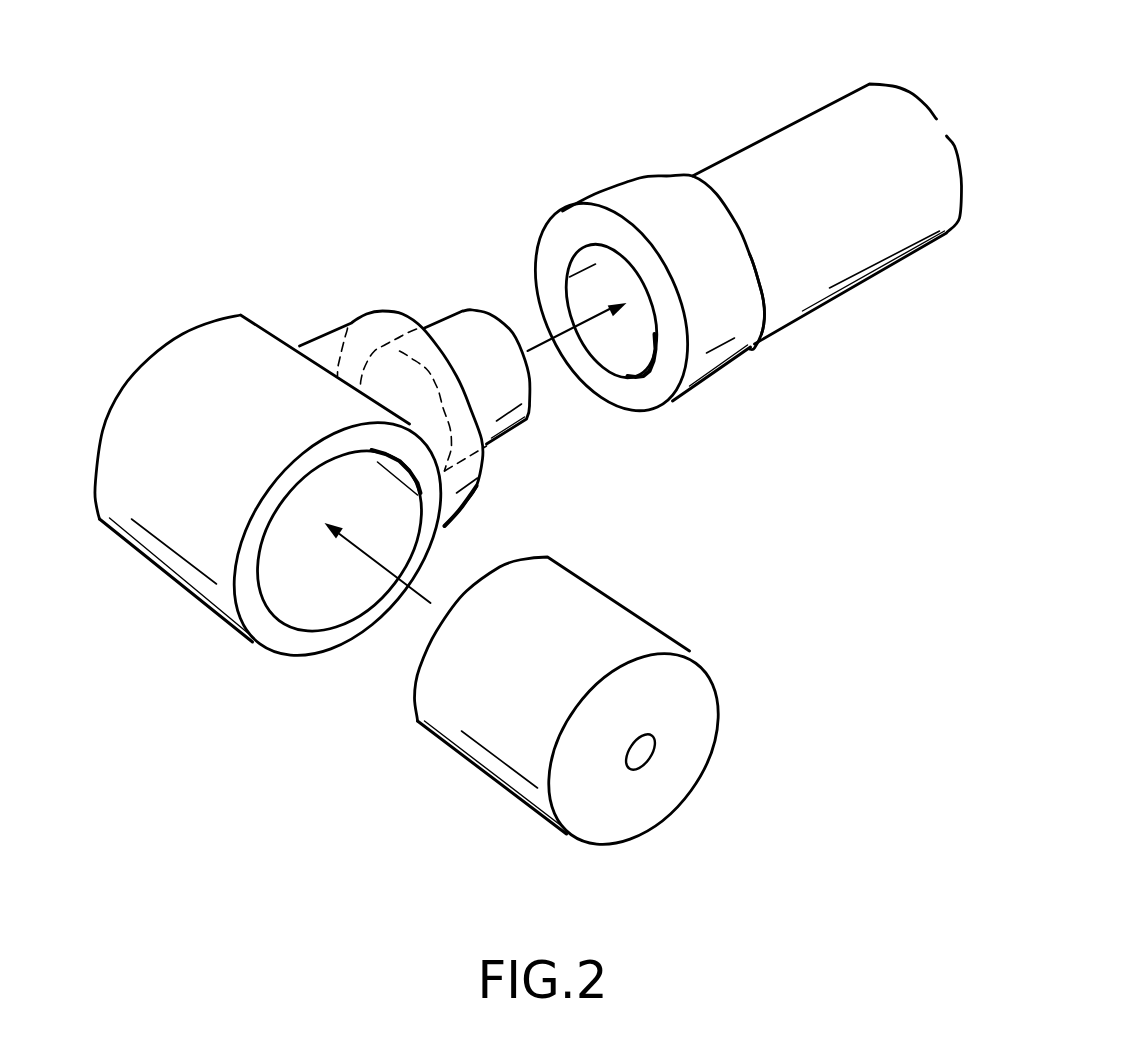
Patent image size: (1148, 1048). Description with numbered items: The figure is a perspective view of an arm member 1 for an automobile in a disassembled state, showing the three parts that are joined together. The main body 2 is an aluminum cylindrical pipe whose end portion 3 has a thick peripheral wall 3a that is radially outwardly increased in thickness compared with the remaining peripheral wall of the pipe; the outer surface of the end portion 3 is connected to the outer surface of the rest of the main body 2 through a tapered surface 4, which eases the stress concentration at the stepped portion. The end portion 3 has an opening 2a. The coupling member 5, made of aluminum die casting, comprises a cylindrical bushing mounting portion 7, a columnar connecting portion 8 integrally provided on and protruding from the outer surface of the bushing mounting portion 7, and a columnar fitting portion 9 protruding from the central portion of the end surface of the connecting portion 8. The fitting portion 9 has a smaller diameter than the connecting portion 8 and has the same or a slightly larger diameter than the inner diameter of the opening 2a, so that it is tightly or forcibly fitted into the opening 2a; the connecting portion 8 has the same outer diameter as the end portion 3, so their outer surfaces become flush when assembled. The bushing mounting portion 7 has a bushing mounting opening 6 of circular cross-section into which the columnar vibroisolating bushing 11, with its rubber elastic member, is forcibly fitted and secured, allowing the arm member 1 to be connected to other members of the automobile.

The arm member 1 is at (472, 112).
The main body 2 is at (825, 152).
The opening 2a is at (635, 342).
The end portion 3 is at (645, 200).
The thick peripheral wall 3a is at (717, 357).
The tapered surface 4 is at (758, 287).
The coupling member 5 is at (232, 355).
The bushing mounting opening 6 is at (318, 581).
The bushing mounting portion 7 is at (205, 562).
The connecting portion 8 is at (463, 475).
The fitting portion 9 is at (503, 398).
The vibroisolating bushing 11 is at (647, 790).